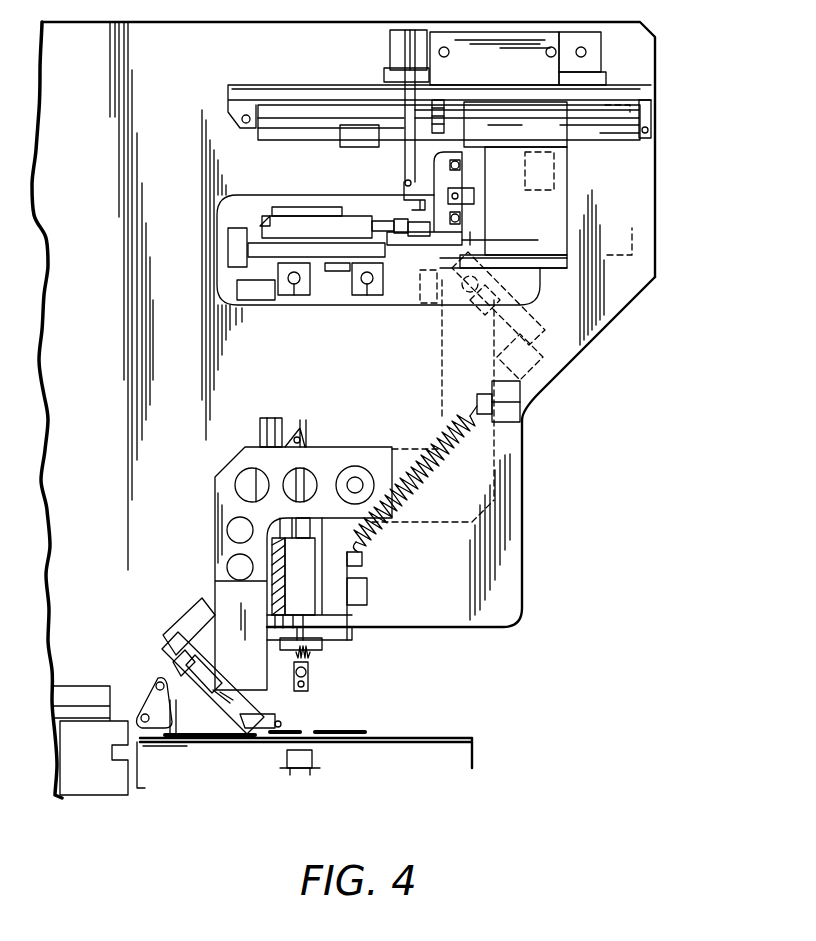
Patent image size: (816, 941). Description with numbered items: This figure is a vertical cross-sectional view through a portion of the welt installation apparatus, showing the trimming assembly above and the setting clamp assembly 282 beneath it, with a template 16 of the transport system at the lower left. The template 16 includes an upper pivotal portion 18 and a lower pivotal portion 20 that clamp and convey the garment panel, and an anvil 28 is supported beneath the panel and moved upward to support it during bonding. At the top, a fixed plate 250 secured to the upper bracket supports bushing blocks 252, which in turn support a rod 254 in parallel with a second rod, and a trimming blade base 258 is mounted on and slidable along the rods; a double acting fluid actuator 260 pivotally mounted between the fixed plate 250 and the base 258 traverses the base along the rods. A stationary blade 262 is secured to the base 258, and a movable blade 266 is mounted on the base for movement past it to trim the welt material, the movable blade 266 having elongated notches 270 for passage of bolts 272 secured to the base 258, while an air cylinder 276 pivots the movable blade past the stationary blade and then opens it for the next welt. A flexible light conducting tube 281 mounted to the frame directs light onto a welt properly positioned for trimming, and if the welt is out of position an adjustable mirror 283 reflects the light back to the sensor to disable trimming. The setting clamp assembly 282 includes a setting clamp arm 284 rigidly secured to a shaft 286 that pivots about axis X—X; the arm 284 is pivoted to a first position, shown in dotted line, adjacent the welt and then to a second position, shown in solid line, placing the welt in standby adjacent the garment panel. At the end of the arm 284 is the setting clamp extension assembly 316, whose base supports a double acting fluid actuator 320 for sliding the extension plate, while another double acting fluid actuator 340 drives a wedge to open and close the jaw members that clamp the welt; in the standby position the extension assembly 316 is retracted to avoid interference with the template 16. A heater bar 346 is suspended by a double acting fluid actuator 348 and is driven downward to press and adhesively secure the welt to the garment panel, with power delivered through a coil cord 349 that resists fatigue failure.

The template 16 is at (140, 692).
The upper pivotal portion 18 is at (356, 730).
The lower pivotal portion 20 is at (378, 738).
The anvil 28 is at (312, 755).
The fixed plate 250 is at (244, 88).
The bushing block 252 is at (440, 100).
The rod 254 is at (626, 128).
The trimming blade base 258 is at (503, 185).
The double acting fluid actuator 260 is at (290, 128).
The stationary blade 262 is at (392, 268).
The movable blade 266 is at (412, 236).
The elongated notch 270 is at (474, 164).
The bolt 272 is at (462, 168).
The air cylinder 276 is at (556, 160).
The flexible light conducting tube 281 is at (418, 200).
The setting clamp assembly 282 is at (494, 637).
The adjustable mirror 283 is at (424, 300).
The setting clamp arm 284 is at (360, 446).
The shaft 286 is at (355, 485).
The setting clamp extension assembly 316 is at (172, 640).
The double acting fluid actuator 320 is at (192, 606).
The double acting fluid actuator 340 is at (174, 664).
The heater bar 346 is at (310, 668).
The double acting fluid actuator 348 is at (350, 590).
The coil cord 349 is at (432, 476).